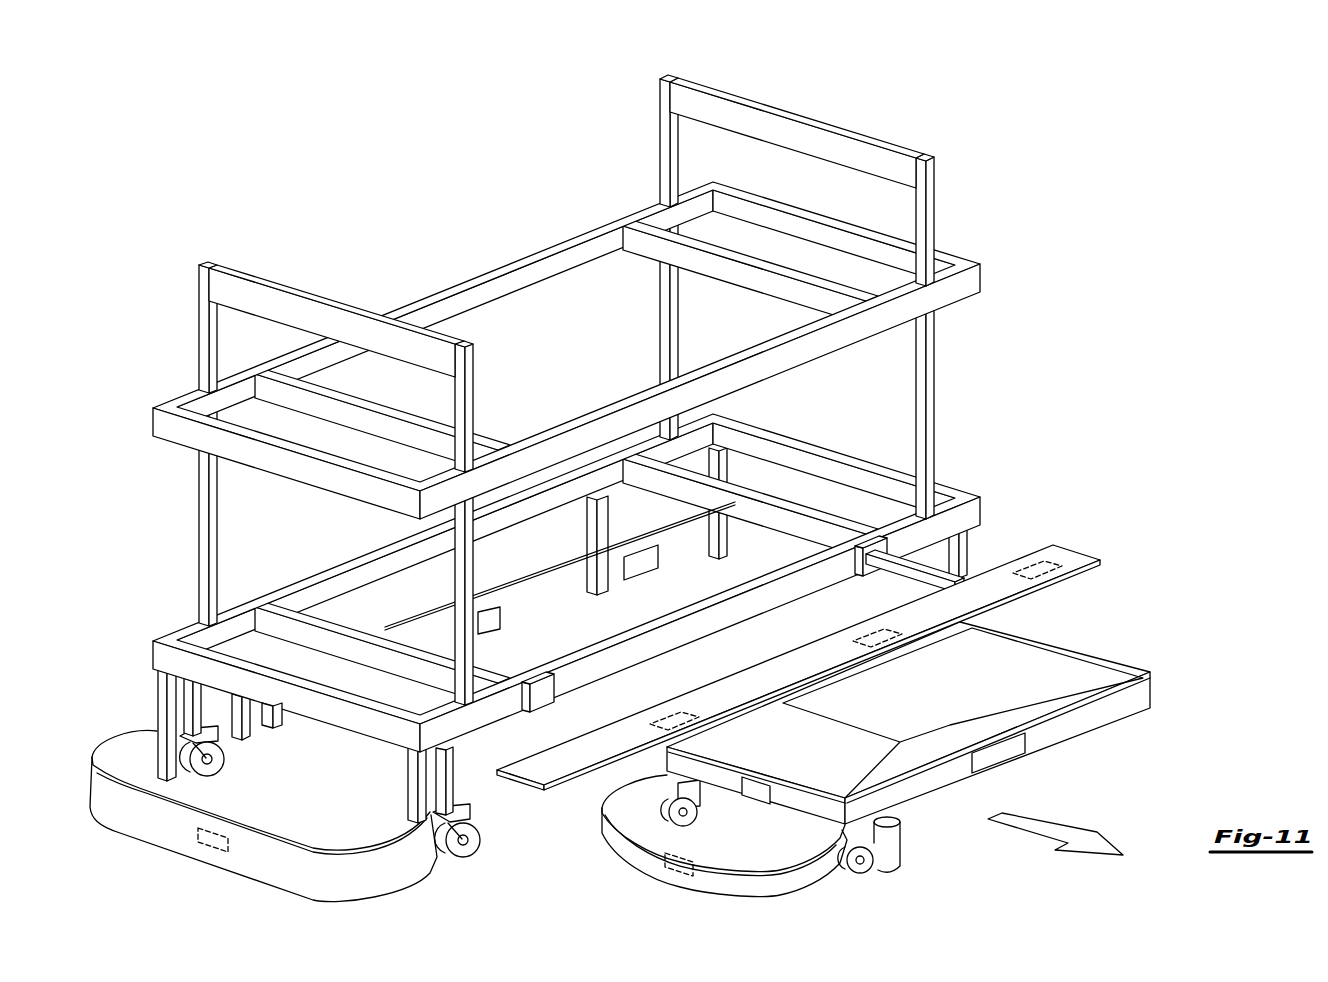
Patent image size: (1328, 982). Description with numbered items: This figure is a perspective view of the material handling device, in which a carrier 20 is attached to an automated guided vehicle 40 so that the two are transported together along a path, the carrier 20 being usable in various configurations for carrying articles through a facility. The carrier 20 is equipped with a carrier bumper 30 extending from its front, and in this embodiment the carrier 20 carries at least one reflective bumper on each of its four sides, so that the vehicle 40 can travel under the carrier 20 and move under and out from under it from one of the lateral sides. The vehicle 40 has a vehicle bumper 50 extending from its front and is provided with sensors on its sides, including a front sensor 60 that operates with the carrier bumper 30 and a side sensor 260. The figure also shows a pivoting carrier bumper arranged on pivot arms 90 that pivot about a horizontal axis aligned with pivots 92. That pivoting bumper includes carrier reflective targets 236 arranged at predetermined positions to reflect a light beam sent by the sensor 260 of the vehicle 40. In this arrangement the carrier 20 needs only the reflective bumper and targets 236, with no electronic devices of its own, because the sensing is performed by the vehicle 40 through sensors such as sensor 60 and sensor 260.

The carrier 20 is at (836, 138).
The carrier bumper 30 is at (121, 820).
The automated guided vehicle 40 is at (924, 693).
The vehicle bumper 50 is at (637, 849).
The sensor 60 is at (760, 790).
The pivot arms 90 is at (912, 570).
The pivots 92 is at (868, 546).
The carrier reflective targets 236 is at (483, 617).
The sensor 260 is at (1003, 758).